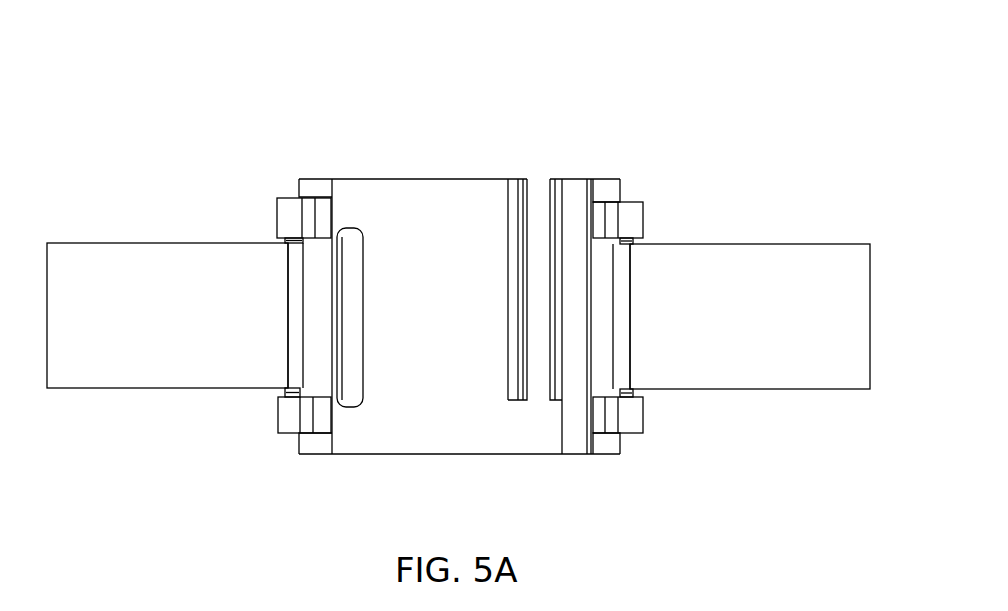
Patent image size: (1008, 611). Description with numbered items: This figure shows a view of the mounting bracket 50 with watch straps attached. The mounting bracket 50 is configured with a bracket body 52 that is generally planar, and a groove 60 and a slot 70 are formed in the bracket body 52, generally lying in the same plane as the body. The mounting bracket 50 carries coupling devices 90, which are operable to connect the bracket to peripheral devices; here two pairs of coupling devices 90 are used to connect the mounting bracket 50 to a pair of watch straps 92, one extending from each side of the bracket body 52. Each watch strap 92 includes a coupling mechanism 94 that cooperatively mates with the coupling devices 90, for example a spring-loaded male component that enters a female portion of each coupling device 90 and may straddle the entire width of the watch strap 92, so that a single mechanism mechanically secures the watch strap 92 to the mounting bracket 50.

The mounting bracket 50 is at (484, 62).
The bracket body 52 is at (415, 196).
The groove 60 is at (547, 206).
The slot 70 is at (350, 242).
The coupling device 90 is at (636, 202).
The watch strap 92 is at (148, 277).
The coupling mechanism 94 is at (643, 240).